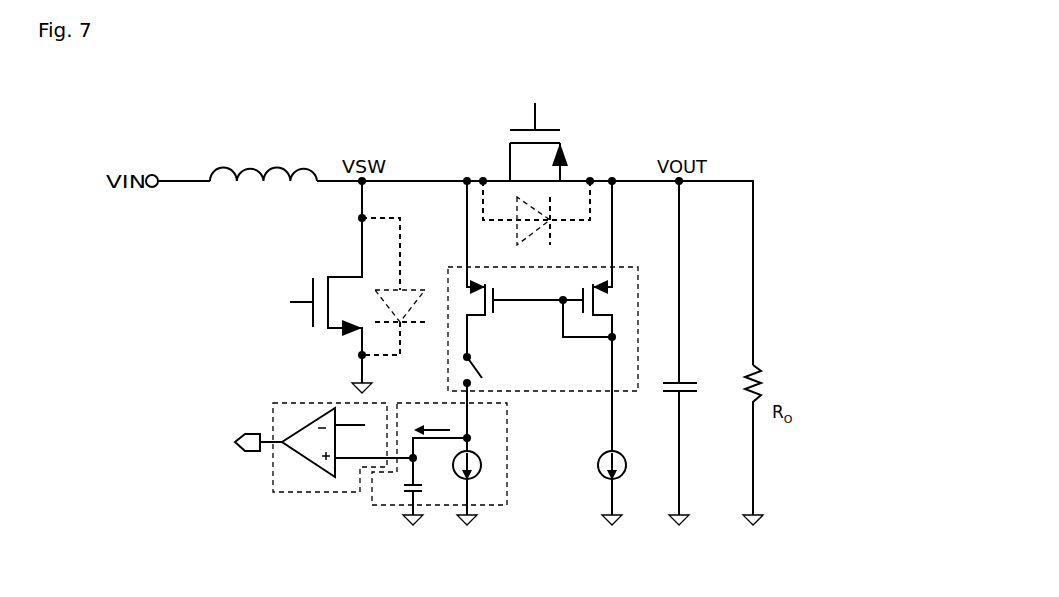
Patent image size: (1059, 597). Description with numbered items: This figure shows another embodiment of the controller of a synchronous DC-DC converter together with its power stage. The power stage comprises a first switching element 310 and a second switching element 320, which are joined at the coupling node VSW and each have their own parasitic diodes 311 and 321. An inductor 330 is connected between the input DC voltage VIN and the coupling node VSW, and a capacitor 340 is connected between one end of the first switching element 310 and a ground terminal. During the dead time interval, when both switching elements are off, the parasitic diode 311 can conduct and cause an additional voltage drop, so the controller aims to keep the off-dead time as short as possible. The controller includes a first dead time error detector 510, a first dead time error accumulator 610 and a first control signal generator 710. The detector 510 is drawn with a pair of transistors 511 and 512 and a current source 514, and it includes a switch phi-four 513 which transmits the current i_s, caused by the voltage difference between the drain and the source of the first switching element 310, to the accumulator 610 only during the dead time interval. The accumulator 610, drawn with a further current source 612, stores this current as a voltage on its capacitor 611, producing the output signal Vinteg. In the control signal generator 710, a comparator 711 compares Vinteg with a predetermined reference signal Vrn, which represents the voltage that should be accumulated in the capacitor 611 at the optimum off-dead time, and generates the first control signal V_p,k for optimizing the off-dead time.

The first switching element 310 is at (562, 130).
The parasitic diode 311 is at (550, 198).
The second switching element 320 is at (323, 277).
The parasitic diode 321 is at (401, 290).
The inductor 330 is at (283, 167).
The capacitor 340 is at (694, 383).
The first dead time error detector 510 is at (633, 267).
The first mirror transistor 511 is at (496, 313).
The second mirror transistor 512 is at (596, 318).
The switch "ø4" 513 is at (484, 371).
The current source 514 is at (598, 455).
The first dead time error accumulator 610 is at (508, 488).
The capacitor 611 is at (422, 491).
The current source 612 is at (484, 456).
The first control signal generator 710 is at (273, 481).
The comparator 711 is at (308, 424).